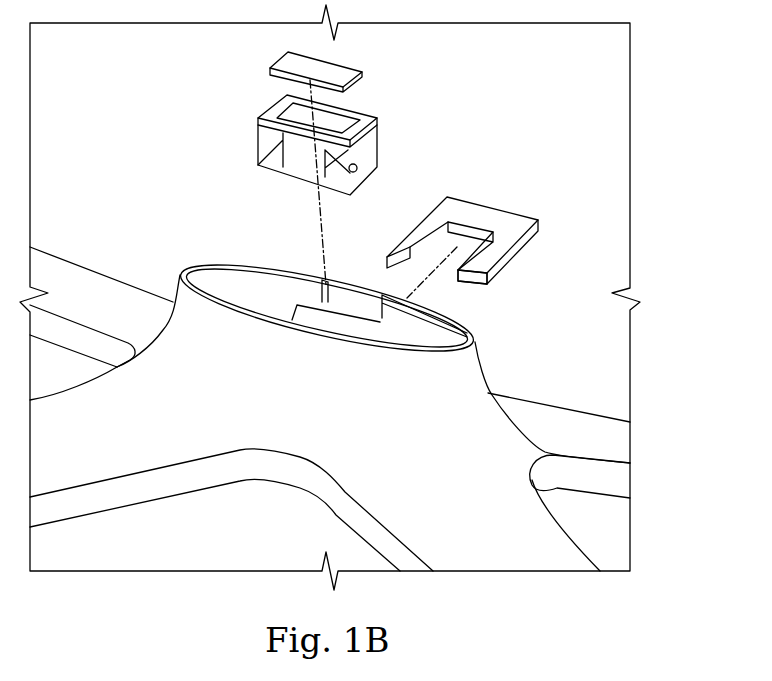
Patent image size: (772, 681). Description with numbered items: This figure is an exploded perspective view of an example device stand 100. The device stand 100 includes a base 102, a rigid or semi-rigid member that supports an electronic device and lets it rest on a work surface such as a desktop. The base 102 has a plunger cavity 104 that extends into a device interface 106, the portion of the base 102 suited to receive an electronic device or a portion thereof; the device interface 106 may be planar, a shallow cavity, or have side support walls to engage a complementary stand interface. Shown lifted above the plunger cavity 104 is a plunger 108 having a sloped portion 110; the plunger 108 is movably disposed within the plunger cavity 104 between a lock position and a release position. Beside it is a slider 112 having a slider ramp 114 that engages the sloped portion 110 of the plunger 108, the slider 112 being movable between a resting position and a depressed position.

The device stand 100 is at (661, 112).
The base 102 is at (180, 340).
The plunger cavity 104 is at (375, 344).
The device interface 106 is at (417, 343).
The plunger 108 is at (262, 130).
The sloped portion 110 is at (357, 171).
The slider 112 is at (477, 218).
The slider ramp 114 is at (488, 275).